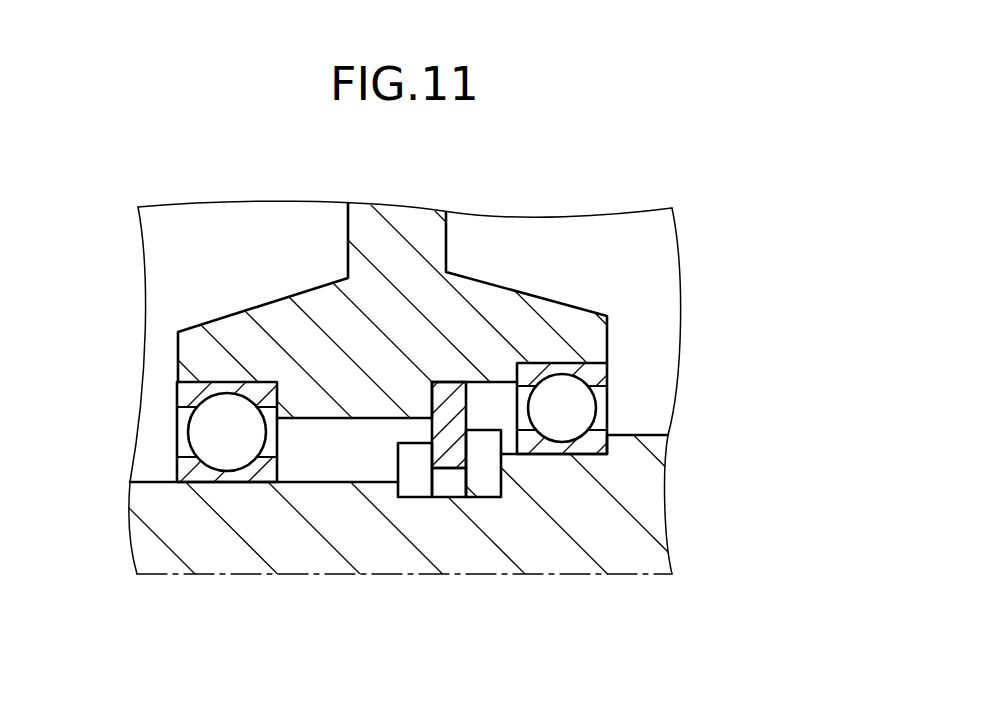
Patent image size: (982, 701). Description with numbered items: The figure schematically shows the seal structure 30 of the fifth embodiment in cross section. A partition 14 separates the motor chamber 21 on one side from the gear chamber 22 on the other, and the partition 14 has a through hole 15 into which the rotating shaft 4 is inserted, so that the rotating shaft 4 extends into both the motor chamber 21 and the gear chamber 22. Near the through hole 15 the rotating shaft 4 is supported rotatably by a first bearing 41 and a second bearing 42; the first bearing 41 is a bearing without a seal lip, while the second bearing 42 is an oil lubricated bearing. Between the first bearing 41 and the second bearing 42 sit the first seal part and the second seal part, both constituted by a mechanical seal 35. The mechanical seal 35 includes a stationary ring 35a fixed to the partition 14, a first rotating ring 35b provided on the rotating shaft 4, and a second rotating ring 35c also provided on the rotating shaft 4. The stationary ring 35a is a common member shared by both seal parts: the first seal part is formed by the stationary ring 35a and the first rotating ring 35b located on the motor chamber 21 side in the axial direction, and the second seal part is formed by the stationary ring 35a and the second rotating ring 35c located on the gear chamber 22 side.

The rotating shaft 4 is at (648, 495).
The partition 14 is at (438, 233).
The through hole 15 is at (337, 422).
The motor chamber 21 is at (603, 266).
The gear chamber 22 is at (197, 266).
The seal structure 30 is at (582, 180).
The mechanical seal 35 is at (412, 400).
The stationary ring 35a is at (452, 442).
The first rotating ring 35b is at (355, 622).
The second rotating ring 35c is at (417, 470).
The first bearing 41 is at (618, 408).
The second bearing 42 is at (170, 432).